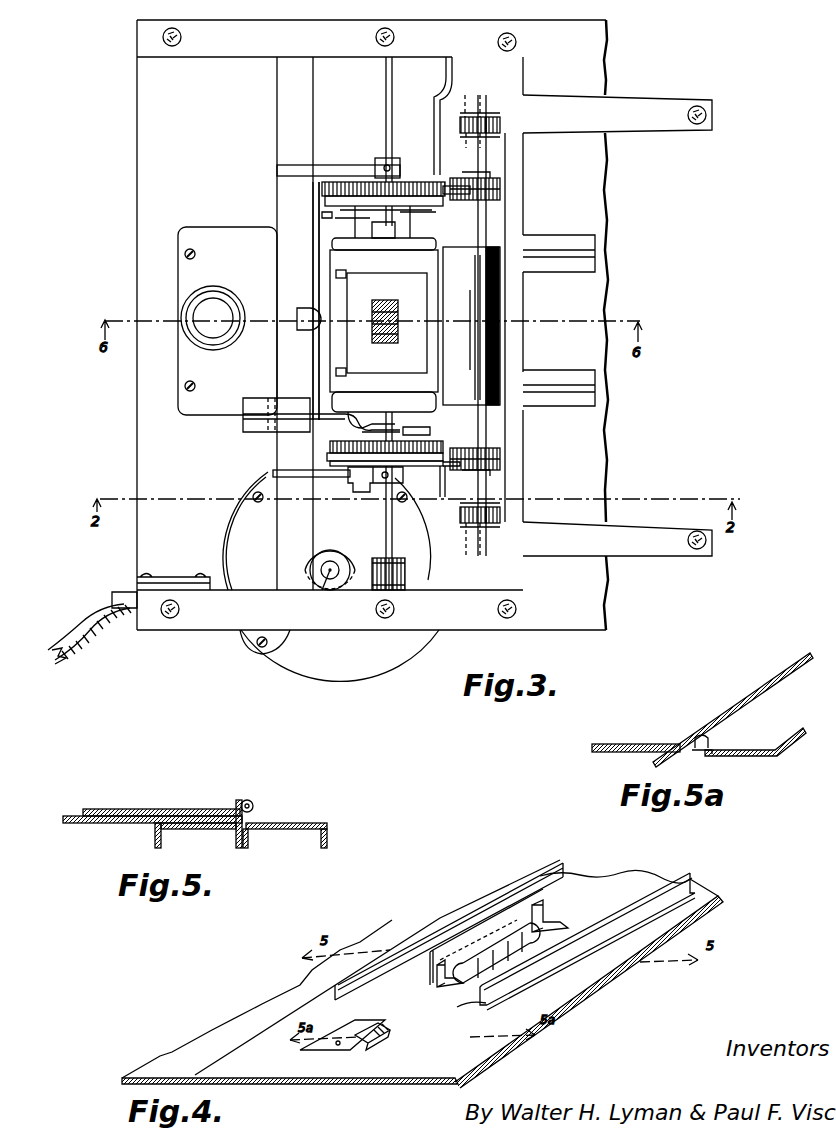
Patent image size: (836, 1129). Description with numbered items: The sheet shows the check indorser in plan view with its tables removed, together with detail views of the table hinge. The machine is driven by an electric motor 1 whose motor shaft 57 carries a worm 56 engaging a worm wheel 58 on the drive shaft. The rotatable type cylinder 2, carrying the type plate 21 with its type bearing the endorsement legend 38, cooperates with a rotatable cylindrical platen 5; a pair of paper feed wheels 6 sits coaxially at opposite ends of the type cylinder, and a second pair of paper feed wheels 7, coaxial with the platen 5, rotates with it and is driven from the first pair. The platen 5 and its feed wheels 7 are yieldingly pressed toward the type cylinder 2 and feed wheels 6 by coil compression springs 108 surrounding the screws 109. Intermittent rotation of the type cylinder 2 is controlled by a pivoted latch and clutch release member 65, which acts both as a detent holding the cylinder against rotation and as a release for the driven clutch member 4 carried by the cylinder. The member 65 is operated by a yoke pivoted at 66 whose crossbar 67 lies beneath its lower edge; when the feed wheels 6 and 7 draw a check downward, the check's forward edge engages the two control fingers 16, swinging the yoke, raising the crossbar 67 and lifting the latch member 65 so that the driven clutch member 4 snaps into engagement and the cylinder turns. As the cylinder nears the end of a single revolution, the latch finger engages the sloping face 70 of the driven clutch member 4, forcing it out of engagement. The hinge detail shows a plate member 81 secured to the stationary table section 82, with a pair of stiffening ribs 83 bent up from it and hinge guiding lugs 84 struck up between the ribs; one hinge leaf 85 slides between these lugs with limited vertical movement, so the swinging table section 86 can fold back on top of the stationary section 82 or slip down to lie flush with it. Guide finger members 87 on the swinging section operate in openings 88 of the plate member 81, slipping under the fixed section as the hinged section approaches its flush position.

In FIG. 3, the electric motor 1 is at (300, 665).
In FIG. 3, the type cylinder 2 is at (324, 276).
In FIG. 3, the driven clutch member 4 is at (430, 431).
In FIG. 3, the cylindrical platen 5 is at (488, 305).
In FIG. 3, the paper feed wheels 6 is at (400, 192).
In FIG. 3, the paper feed wheels 7 is at (500, 193).
In FIG. 3, the control fingers 16 is at (444, 186).
In FIG. 3, the type plate 21 is at (381, 323).
In FIG. 3, the type block 38 is at (382, 302).
In FIG. 3, the worm 56 is at (334, 550).
In FIG. 3, the motor shaft 57 is at (322, 590).
In FIG. 3, the worm wheel 58 is at (395, 558).
In FIG. 3, the pivoted latch and clutch release member 65 is at (303, 417).
In FIG. 3, the pivot of yoke member 66 is at (368, 170).
In FIG. 3, the crossbar 67 is at (318, 258).
In FIG. 3, the sloping face 70 is at (378, 428).
In FIG. 3, the coil compression springs 108 is at (500, 124).
In FIG. 3, the screws 109 is at (460, 125).
In FIG. 5, the plate member 81 is at (305, 823).
In FIG. 5A, the plate member 81 is at (755, 757).
In FIG. 4, the plate member 81 is at (488, 1003).
In FIG. 5, the stationary table section 82 is at (100, 822).
In FIG. 5A, the stationary table section 82 is at (630, 742).
In FIG. 5, the stiffening ribs 83 is at (155, 838).
In FIG. 4, the stiffening ribs 83 is at (572, 866).
In FIG. 5, the hinge guiding lugs 84 is at (232, 832).
In FIG. 4, the hinge guiding lugs 84 is at (548, 910).
In FIG. 5, the hinge leaf 85 is at (244, 818).
In FIG. 4, the hinge leaf 85 is at (523, 900).
In FIG. 5, the swinging table section 86 is at (105, 810).
In FIG. 5A, the swinging table section 86 is at (764, 685).
In FIG. 5A, the guide finger members 87 is at (708, 744).
In FIG. 4, the guide finger members 87 is at (378, 1024).
In FIG. 5A, the openings 88 is at (714, 751).
In FIG. 4, the openings 88 is at (330, 1048).